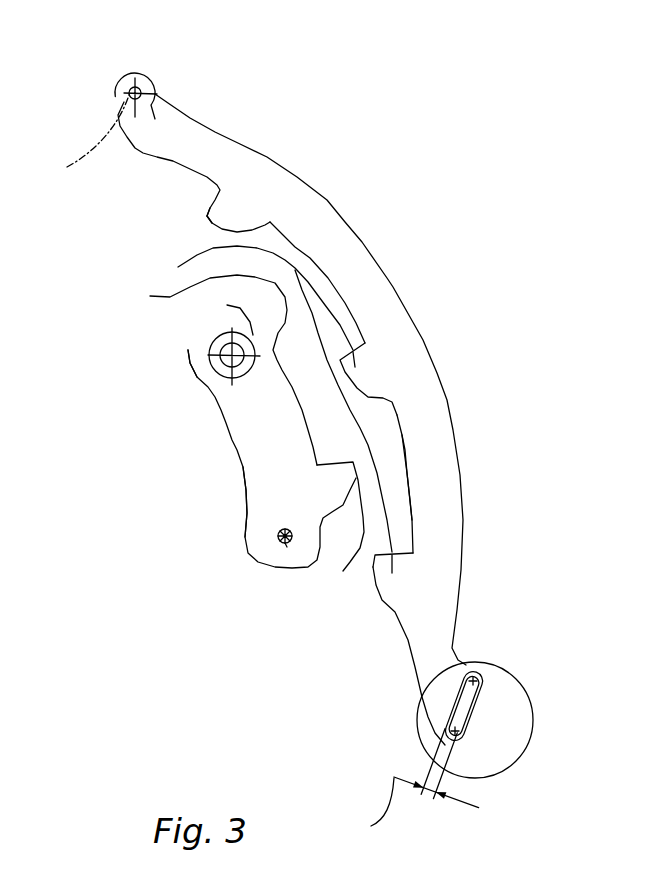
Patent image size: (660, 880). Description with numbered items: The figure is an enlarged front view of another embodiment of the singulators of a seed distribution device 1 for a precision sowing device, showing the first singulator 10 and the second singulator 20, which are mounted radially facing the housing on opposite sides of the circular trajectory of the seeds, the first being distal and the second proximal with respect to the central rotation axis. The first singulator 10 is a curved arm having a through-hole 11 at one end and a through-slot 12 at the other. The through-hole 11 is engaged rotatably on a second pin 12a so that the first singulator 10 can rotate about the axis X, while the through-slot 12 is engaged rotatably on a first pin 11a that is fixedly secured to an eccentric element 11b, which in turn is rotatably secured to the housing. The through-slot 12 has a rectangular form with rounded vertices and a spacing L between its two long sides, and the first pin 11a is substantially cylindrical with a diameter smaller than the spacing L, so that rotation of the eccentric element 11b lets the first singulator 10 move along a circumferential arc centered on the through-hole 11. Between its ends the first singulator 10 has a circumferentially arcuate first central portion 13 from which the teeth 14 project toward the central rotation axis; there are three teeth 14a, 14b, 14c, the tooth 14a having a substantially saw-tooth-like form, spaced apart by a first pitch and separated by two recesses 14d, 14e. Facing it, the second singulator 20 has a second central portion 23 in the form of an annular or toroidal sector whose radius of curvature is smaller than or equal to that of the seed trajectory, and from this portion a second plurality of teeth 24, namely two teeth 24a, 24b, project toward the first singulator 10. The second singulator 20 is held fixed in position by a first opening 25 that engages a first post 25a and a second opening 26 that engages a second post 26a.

The seed distribution device 1 is at (390, 125).
The first singulator 10 is at (387, 295).
The through-hole 11 is at (160, 108).
The first pin 11a is at (477, 679).
The eccentric element 11b is at (500, 702).
The through-slot 12 is at (465, 728).
The second pin 12a is at (135, 86).
The first central portion 13 is at (358, 271).
The teeth 14 is at (230, 203).
The tooth 14a is at (245, 220).
The tooth 14b is at (368, 377).
The tooth 14c is at (395, 587).
The recess 14d is at (311, 258).
The recess 14e is at (407, 473).
The second singulator 20 is at (245, 423).
The second central portion 23 is at (261, 488).
The second plurality of teeth 24 is at (227, 305).
The tooth 24a is at (247, 411).
The tooth 24b is at (340, 532).
The first opening 25 is at (208, 331).
The first post 25a is at (270, 283).
The second opening 26 is at (280, 547).
The second post 26a is at (287, 547).